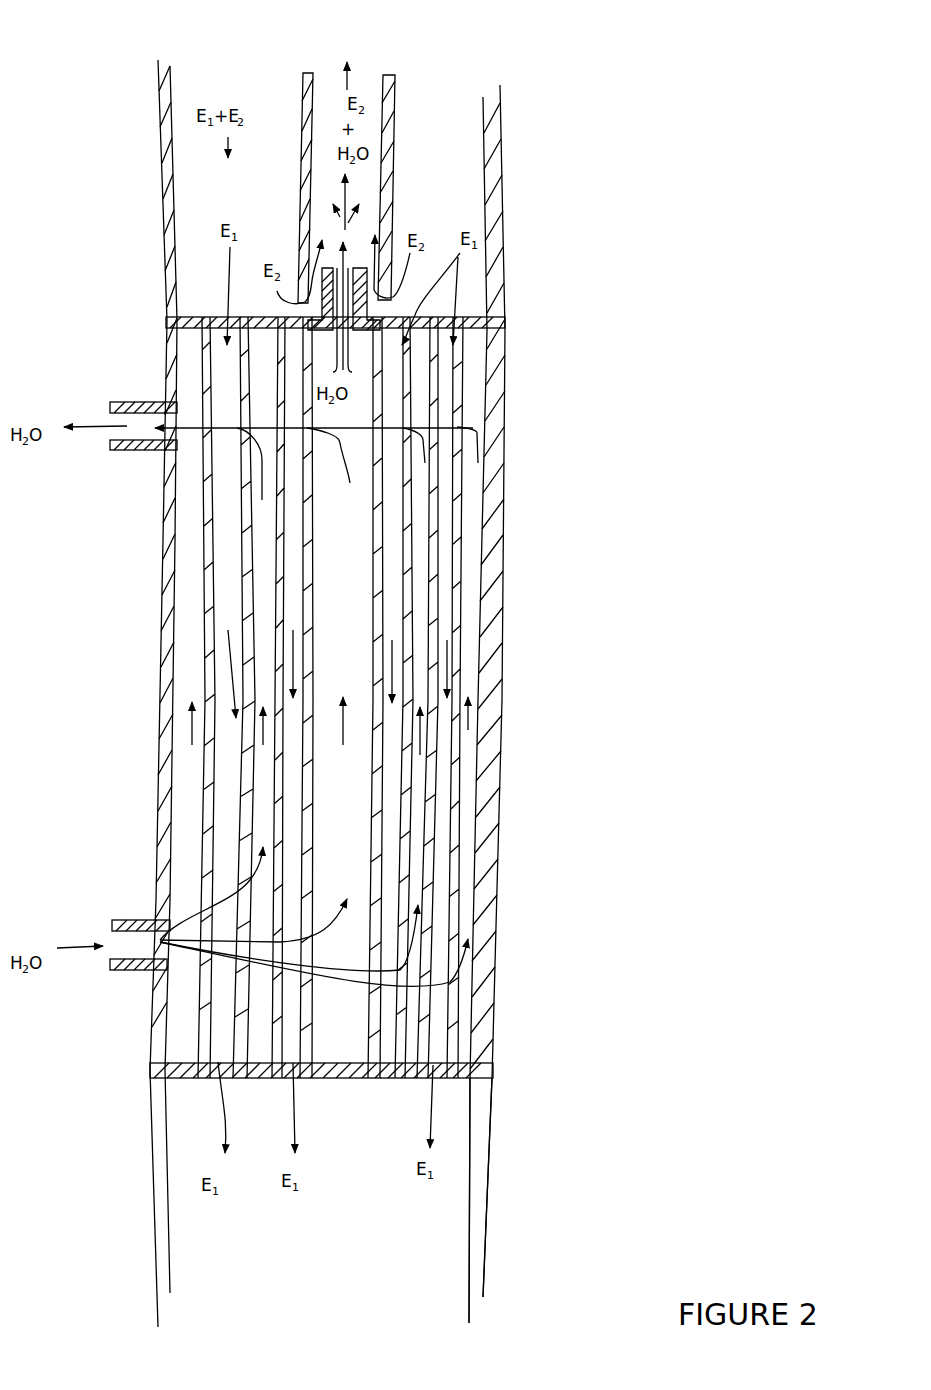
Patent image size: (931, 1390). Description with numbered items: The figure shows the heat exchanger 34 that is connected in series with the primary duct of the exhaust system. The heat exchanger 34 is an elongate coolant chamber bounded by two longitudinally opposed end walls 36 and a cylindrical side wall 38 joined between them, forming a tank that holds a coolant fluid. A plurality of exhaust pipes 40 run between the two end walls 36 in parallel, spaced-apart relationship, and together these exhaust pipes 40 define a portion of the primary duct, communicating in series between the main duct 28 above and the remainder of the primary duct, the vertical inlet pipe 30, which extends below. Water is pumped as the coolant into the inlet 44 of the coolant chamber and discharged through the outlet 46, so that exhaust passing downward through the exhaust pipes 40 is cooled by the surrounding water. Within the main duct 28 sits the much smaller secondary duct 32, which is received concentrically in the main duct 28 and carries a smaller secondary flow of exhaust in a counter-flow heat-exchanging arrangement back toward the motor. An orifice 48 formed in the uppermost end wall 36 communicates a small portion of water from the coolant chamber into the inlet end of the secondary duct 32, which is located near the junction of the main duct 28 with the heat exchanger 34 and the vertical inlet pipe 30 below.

The main duct 28 is at (159, 153).
The vertical inlet pipe 30 is at (490, 1167).
The secondary duct 32 is at (397, 113).
The heat exchanger 34 is at (695, 247).
The end walls 36 is at (497, 316).
The cylindrical side wall 38 is at (495, 723).
The exhaust pipes 40 is at (402, 530).
The inlet 44 is at (110, 975).
The outlet 46 is at (137, 447).
The orifice 48 is at (355, 330).